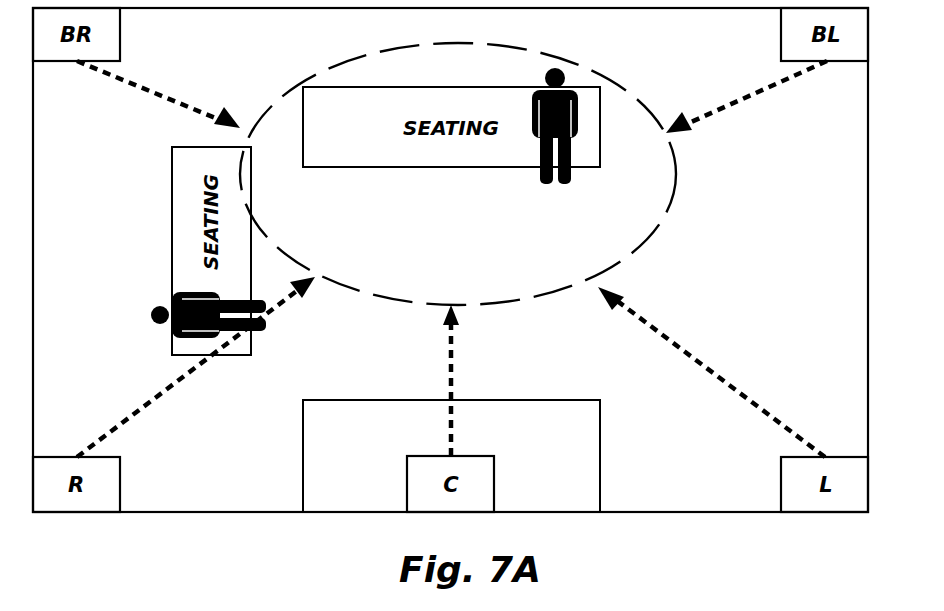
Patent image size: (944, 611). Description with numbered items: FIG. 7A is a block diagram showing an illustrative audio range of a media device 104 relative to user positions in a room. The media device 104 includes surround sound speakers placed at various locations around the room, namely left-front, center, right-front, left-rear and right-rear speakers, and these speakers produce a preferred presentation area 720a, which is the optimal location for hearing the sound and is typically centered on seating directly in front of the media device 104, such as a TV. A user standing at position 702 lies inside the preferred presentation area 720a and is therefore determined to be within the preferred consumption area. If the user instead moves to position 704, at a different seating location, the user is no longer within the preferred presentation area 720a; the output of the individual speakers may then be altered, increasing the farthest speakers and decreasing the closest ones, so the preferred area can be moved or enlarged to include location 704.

The media device 104 is at (303, 455).
The user position 702 is at (543, 173).
The user position 704 is at (266, 327).
The preferred presentation area 720a is at (651, 236).